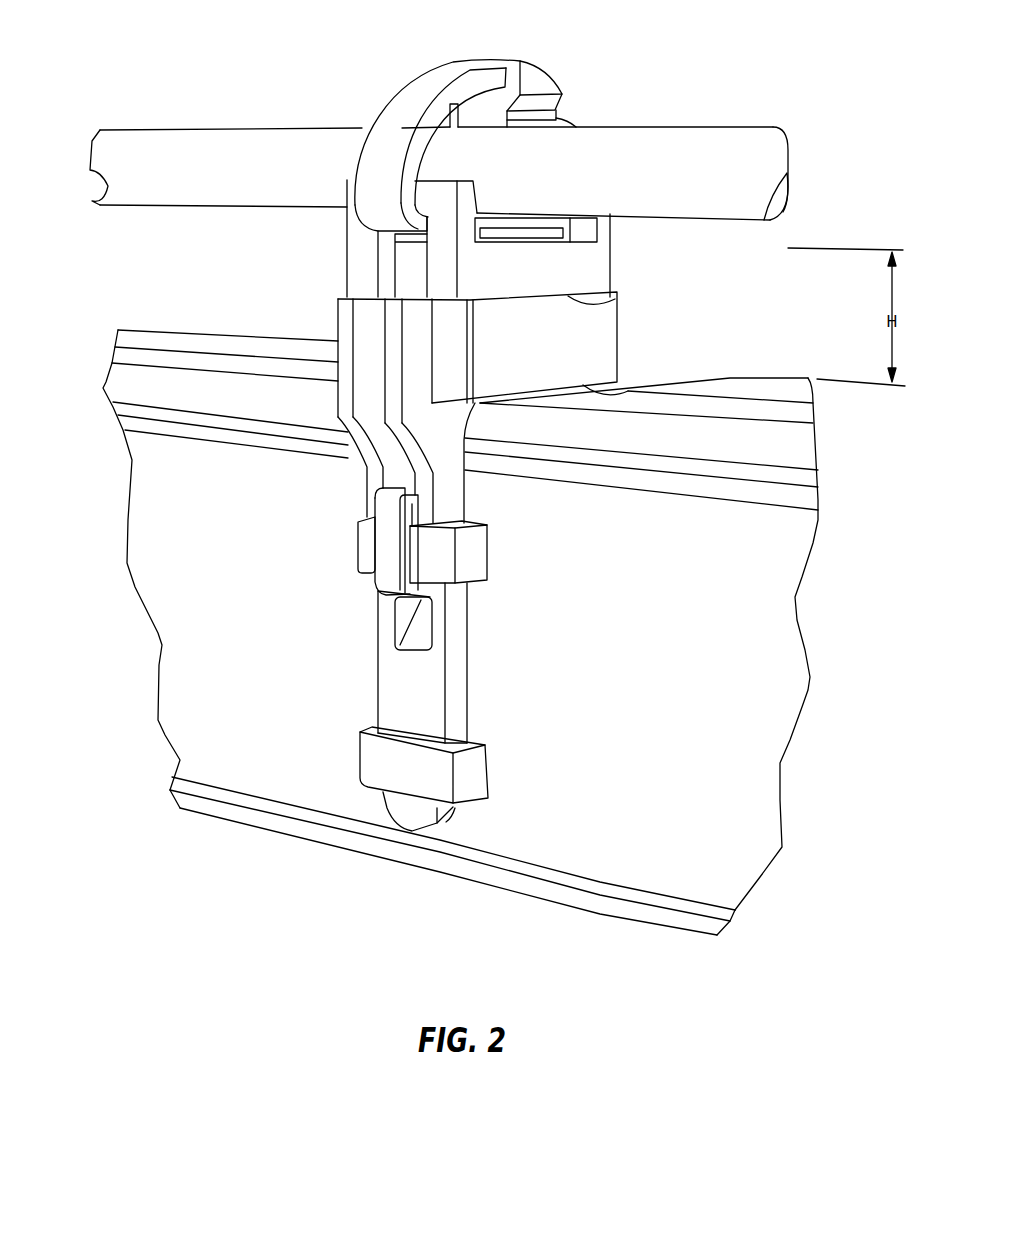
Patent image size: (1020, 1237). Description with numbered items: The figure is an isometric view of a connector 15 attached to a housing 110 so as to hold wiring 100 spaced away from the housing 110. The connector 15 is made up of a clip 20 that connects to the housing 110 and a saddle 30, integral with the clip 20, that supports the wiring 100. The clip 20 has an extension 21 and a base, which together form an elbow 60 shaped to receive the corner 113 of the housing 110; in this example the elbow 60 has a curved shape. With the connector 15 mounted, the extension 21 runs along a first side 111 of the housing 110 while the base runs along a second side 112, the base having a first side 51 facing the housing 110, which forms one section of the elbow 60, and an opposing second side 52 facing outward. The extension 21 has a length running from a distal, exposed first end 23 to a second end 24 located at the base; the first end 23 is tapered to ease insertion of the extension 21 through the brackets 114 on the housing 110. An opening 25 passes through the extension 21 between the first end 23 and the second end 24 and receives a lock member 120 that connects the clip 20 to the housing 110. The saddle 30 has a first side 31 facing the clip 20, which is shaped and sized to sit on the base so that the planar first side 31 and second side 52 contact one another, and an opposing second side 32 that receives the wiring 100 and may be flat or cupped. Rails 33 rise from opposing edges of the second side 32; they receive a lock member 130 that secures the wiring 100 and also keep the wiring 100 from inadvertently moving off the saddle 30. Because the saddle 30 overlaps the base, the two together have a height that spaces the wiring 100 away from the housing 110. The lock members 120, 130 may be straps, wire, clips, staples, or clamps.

The connector 15 is at (740, 272).
The clip 20 is at (343, 328).
The extension 21 is at (427, 695).
The first end 23 is at (413, 830).
The second end 24 is at (347, 433).
The opening 25 is at (420, 603).
The saddle 30 is at (583, 262).
The first side 31 is at (617, 292).
The second side 32 is at (511, 239).
The rails 33 is at (348, 180).
The first side 51 is at (625, 388).
The second side 52 is at (363, 293).
The elbow 60 is at (490, 431).
The wiring 100 is at (693, 152).
The housing 110 is at (752, 670).
The first side 111 is at (190, 655).
The second side 112 is at (730, 386).
The corner 113 is at (162, 370).
The brackets 114 is at (366, 542).
The lock member 120 is at (392, 565).
The lock member 130 is at (424, 83).